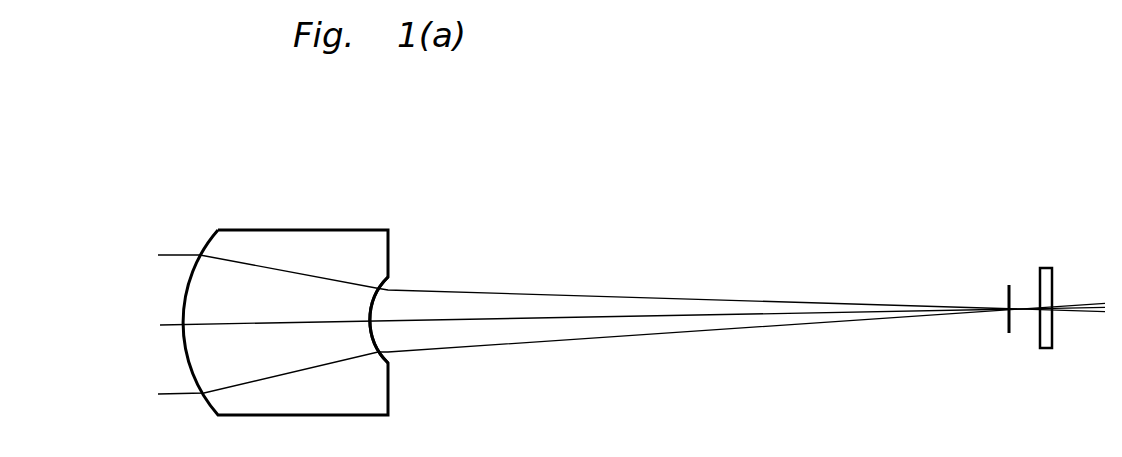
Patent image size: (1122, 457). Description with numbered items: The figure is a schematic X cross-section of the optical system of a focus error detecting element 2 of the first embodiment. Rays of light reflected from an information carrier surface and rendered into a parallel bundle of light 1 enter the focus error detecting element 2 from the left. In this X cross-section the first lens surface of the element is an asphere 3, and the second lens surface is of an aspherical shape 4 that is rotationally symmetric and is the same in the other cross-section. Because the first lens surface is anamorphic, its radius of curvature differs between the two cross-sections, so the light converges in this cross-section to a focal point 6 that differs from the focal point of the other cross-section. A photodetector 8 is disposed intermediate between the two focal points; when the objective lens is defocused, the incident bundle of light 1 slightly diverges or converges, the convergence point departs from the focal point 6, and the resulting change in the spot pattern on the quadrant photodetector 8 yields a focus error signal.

The parallel bundle of light 1 is at (175, 255).
The focus error detecting element 2 is at (284, 242).
The asphere 3 is at (208, 413).
The aspherical shape 4 is at (390, 281).
The focal point 6 is at (1007, 285).
The photodetector 8 is at (1048, 268).